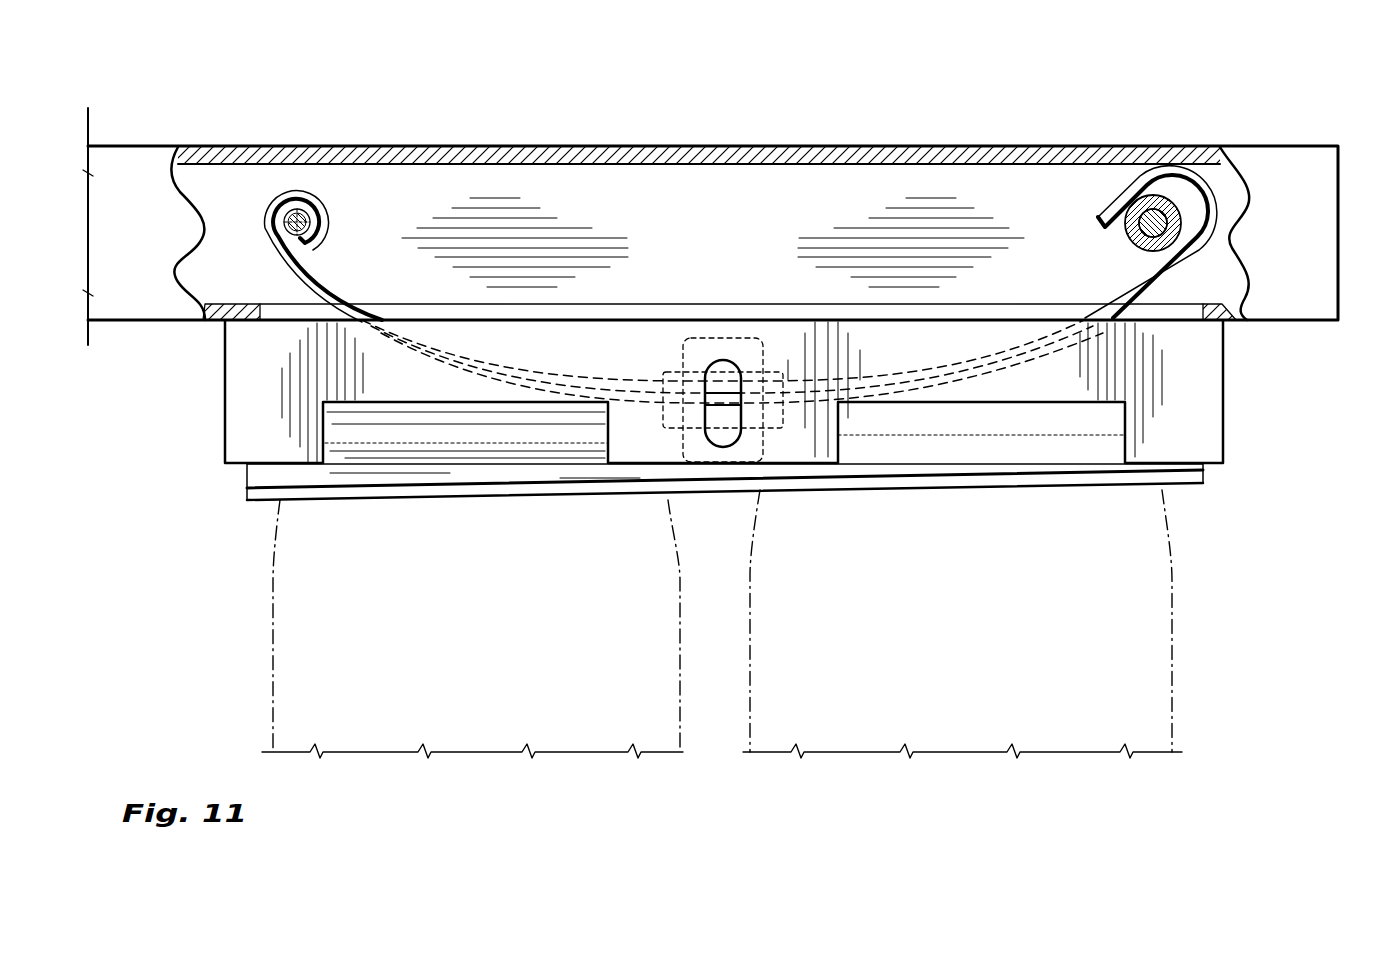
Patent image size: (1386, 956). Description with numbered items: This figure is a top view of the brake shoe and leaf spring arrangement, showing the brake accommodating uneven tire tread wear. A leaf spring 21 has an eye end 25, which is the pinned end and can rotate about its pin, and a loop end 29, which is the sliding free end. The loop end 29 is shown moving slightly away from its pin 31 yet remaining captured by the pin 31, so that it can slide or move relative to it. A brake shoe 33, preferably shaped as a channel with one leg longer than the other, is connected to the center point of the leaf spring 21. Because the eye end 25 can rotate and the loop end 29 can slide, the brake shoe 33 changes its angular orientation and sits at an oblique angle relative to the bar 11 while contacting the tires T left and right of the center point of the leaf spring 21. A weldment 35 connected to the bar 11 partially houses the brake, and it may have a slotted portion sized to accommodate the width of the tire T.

The bar 11 is at (566, 150).
The leaf spring 21 is at (293, 208).
The eye end 25 is at (273, 209).
The loop end 29 is at (1207, 190).
The pin 31 is at (1155, 203).
The brake shoe 33 is at (256, 478).
The weldment 35 is at (258, 357).
The tire T is at (271, 640).